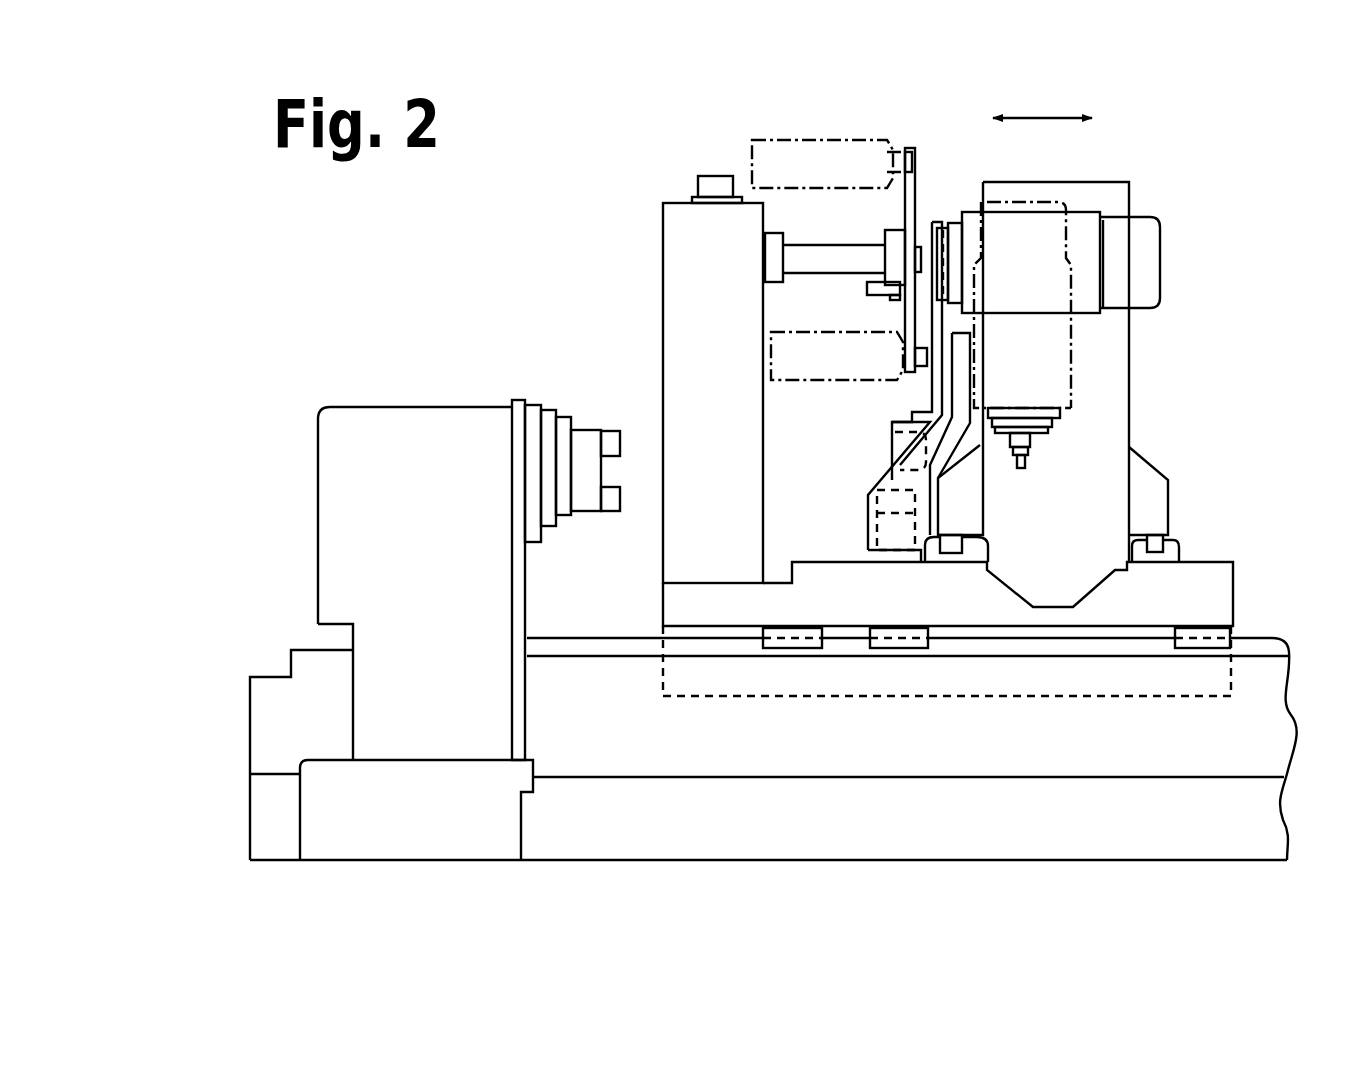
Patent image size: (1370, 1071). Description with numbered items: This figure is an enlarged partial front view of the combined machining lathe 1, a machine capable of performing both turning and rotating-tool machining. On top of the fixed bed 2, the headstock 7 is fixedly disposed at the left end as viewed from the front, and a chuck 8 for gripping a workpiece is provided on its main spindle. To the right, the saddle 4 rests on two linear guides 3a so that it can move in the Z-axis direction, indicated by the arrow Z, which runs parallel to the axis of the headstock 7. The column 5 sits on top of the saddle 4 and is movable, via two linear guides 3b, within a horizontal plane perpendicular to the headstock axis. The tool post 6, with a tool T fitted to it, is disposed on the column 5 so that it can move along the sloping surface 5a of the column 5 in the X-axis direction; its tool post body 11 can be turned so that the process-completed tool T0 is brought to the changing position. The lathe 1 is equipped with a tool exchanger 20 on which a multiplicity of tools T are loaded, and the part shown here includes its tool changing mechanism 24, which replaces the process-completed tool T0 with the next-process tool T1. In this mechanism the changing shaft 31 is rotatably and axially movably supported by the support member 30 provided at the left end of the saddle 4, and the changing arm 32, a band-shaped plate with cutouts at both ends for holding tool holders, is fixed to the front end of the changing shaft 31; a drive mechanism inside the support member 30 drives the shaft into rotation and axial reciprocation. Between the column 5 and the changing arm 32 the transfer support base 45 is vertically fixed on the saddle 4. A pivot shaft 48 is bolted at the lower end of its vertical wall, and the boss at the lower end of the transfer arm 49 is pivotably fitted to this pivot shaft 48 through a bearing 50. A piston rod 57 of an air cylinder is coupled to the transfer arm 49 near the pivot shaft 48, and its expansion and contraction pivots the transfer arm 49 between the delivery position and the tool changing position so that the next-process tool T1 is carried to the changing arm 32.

The combined machining lathe 1 is at (795, 466).
The fixed bed 2 is at (1294, 718).
The linear guides 3a is at (1235, 635).
The linear guides 3b is at (967, 553).
The saddle 4 is at (1239, 574).
The column 5 is at (1133, 406).
The sloping surface 5a is at (1118, 436).
The tool post 6 is at (1158, 203).
The headstock 7 is at (372, 394).
The chuck 8 is at (598, 430).
The tool post body 11 is at (1072, 358).
The tool exchanger 20 is at (860, 268).
The tool changing mechanism 24 is at (706, 167).
The support member 30 is at (663, 262).
The changing shaft 31 is at (830, 273).
The changing arm 32 is at (921, 178).
The transfer support base 45 is at (862, 527).
The pivot shaft 48 is at (878, 560).
The transfer arm 49 is at (926, 389).
The bearing 50 is at (910, 560).
The piston rod 57 is at (880, 456).
The tool T is at (1022, 468).
The process-completed tool T0 is at (840, 138).
The next-process tool T1 is at (837, 398).
The Z-axis Z is at (1020, 118).